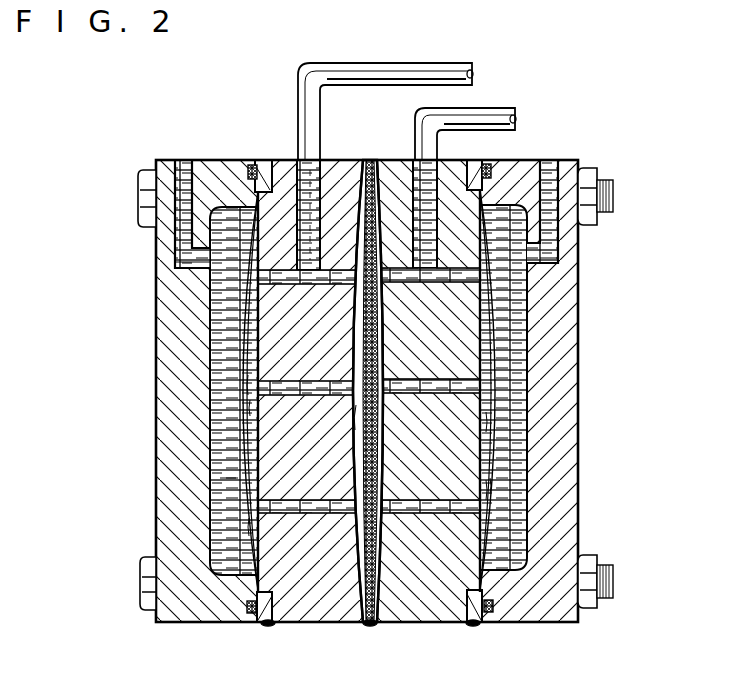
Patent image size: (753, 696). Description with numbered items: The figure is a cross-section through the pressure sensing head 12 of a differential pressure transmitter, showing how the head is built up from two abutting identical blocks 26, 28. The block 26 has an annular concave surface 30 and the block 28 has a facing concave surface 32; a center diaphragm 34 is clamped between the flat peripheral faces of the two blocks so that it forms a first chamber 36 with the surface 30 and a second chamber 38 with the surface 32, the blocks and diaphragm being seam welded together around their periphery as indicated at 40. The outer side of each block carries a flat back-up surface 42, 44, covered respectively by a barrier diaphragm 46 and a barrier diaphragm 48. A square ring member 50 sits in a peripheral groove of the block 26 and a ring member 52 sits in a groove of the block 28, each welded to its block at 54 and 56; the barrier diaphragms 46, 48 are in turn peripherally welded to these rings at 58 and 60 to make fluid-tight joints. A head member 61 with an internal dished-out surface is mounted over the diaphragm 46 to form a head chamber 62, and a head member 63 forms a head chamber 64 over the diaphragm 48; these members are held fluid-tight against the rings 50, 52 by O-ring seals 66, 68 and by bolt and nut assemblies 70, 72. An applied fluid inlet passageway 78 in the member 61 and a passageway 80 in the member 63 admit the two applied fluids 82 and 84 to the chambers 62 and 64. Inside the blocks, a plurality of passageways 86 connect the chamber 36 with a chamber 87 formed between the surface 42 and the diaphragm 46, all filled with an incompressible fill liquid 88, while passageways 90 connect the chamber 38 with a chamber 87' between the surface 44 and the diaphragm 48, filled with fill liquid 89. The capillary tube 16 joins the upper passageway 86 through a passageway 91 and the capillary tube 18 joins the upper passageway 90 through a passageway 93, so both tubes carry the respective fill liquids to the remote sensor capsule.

The pressure sensing head 12 is at (630, 214).
The capillary tube 16 is at (413, 63).
The capillary tube 18 is at (497, 108).
The block 26 is at (322, 605).
The block 28 is at (428, 608).
The annular concave surface 30 is at (354, 420).
The annular concave surface 32 is at (380, 320).
The center diaphragm 34 is at (353, 160).
The first chamber 36 is at (353, 330).
The second chamber 38 is at (382, 424).
The seam weld 40 is at (368, 605).
The flat back-up surface 42 is at (257, 343).
The flat back-up surface 44 is at (483, 332).
The barrier diaphragm 46 is at (250, 383).
The barrier diaphragm 48 is at (488, 490).
The square frame or ring member 50 is at (258, 605).
The square frame or ring member 52 is at (483, 605).
The seam weld 54 is at (266, 160).
The seam weld 56 is at (470, 160).
The seam weld 58 is at (257, 598).
The seam weld 60 is at (478, 596).
The head member 61 is at (160, 447).
The head chamber 62 is at (228, 483).
The head member 63 is at (580, 455).
The head chamber 64 is at (513, 297).
The O-ring seal 66 is at (250, 166).
The O-ring seal 68 is at (488, 166).
The bolt and nut assembly 70 is at (139, 178).
The bolt and nut assembly 72 is at (142, 600).
The applied fluid inlet passageway 78 is at (178, 262).
The applied fluid inlet passageway 80 is at (568, 243).
The applied fluid 82 is at (184, 168).
The applied fluid 84 is at (550, 168).
The passageways 86 is at (273, 268).
The chamber 87 is at (179, 533).
The chamber 87' is at (564, 508).
The fill liquid 88 is at (250, 407).
The fill liquid 89 is at (486, 423).
The passageways 90 is at (390, 160).
The passageway 91 is at (333, 160).
The passageway 93 is at (398, 160).